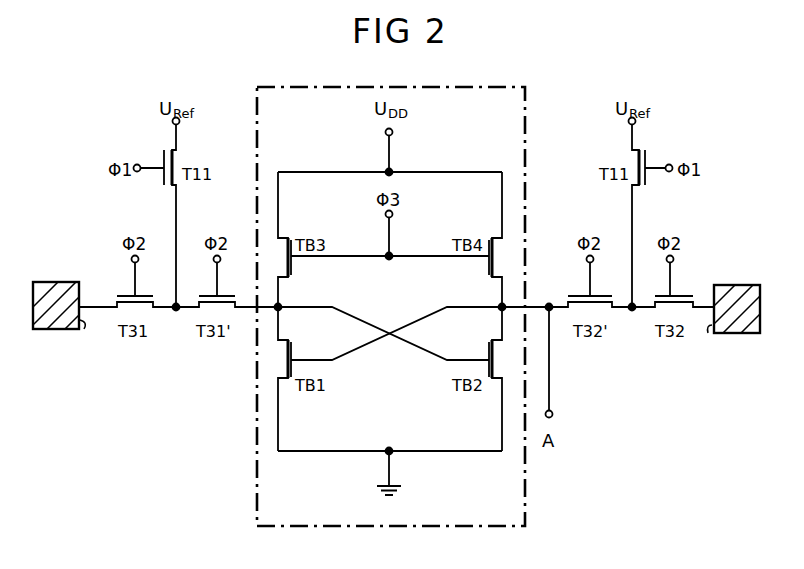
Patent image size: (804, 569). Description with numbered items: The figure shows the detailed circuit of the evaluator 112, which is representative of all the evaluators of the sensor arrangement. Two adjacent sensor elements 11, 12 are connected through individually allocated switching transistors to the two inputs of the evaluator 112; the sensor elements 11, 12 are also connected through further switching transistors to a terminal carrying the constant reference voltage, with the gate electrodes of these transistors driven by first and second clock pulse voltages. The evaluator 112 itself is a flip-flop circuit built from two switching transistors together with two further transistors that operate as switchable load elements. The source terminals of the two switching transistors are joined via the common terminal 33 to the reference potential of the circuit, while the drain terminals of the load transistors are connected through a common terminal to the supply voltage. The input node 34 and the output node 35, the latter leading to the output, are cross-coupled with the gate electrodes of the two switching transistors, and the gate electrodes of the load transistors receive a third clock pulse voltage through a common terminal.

The sensor element 11 is at (71, 286).
The sensor element 12 is at (720, 291).
The common terminal 33 is at (390, 462).
The input node 34 is at (283, 305).
The output node 35 is at (497, 305).
The evaluator 112 is at (256, 479).